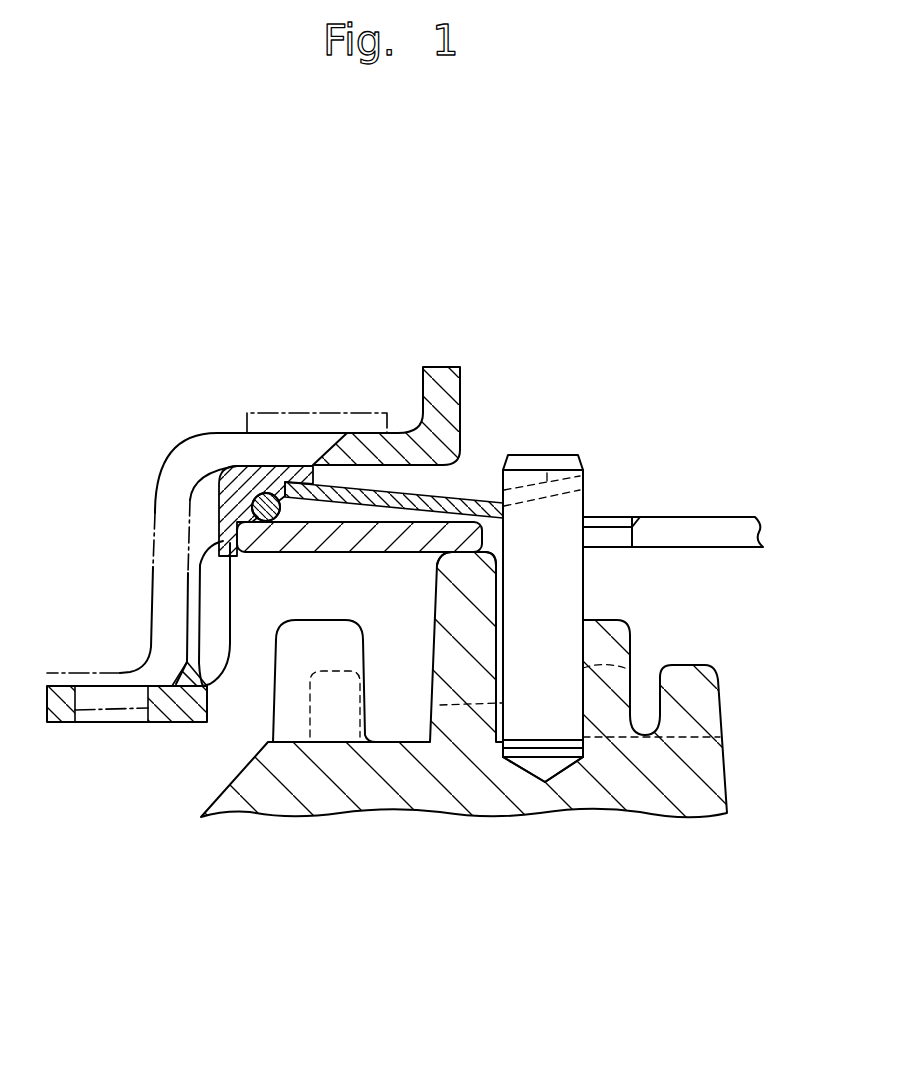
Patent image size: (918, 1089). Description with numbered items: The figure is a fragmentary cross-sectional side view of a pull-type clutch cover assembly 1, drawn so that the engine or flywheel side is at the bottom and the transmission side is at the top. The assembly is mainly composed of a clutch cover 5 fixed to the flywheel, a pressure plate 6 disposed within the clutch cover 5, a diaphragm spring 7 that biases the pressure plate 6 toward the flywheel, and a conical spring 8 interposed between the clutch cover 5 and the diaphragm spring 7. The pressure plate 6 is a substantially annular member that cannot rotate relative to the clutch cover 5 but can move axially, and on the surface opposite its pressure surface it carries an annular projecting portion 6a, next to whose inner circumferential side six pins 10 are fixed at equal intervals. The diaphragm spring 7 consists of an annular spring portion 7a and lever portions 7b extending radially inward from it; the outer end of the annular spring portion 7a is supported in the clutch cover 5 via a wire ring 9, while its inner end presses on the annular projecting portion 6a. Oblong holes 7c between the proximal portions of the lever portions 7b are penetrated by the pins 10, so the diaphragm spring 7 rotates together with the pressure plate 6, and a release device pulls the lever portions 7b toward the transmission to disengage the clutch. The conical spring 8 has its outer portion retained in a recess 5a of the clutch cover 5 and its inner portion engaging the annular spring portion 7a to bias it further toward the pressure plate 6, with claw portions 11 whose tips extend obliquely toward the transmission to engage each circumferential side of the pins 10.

The pull-type clutch cover assembly 1 is at (514, 291).
The clutch cover 5 is at (268, 466).
The recess 5a is at (275, 476).
The pressure plate 6 is at (455, 783).
The annular projecting portion 6a is at (470, 568).
The diaphragm spring 7 is at (685, 498).
The annular spring portion 7a is at (423, 493).
The lever portions 7b is at (708, 527).
The oblong holes 7c is at (607, 533).
The conical spring 8 is at (393, 465).
The wire ring 9 is at (237, 487).
The pins 10 is at (563, 590).
The claw portions 11 is at (557, 455).